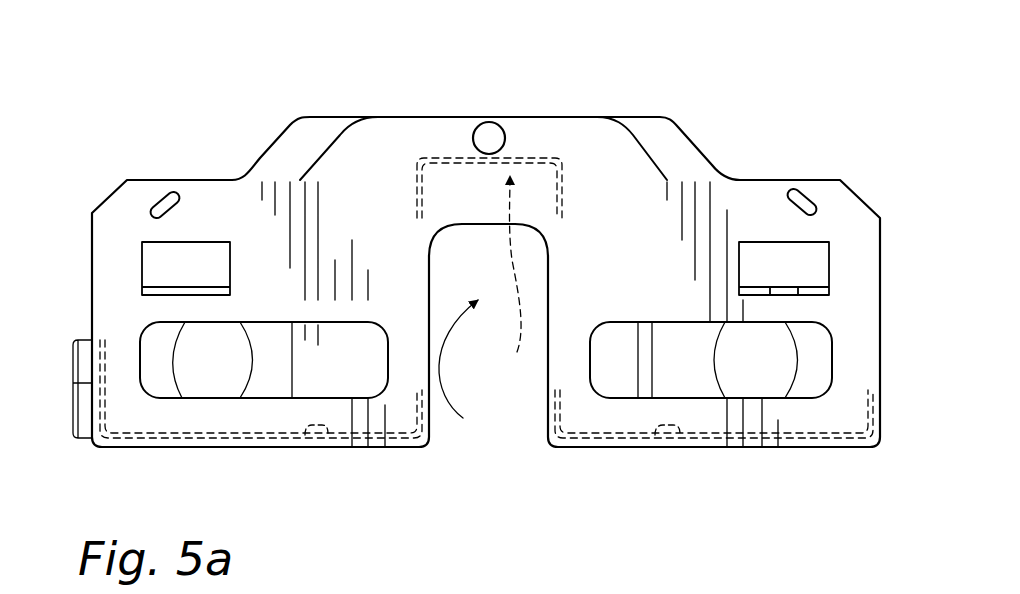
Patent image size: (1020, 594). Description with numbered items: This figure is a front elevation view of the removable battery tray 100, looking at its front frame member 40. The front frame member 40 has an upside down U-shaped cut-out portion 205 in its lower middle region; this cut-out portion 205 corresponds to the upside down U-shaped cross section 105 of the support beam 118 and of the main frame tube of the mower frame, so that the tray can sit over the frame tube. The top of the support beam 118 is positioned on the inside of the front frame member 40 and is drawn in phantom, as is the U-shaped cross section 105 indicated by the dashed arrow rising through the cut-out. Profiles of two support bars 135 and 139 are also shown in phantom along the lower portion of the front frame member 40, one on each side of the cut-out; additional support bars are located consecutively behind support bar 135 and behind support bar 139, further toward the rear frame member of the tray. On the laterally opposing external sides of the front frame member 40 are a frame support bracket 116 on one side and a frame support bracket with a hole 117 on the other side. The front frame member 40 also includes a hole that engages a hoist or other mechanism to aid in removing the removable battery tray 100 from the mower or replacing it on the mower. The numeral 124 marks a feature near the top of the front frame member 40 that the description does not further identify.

The removable battery tray 100 is at (760, 125).
The front frame member 40 is at (845, 200).
The frame support bracket with a hole 117 is at (168, 263).
The frame support bracket 116 is at (813, 270).
The nose-bridge pivot 124 is at (489, 138).
The support beam 118 is at (565, 178).
The upside down U shaped cross section 105 is at (517, 352).
The upside down U shaped cut-out portion 205 is at (476, 369).
The support bar 135 is at (325, 448).
The support bar 139 is at (673, 440).